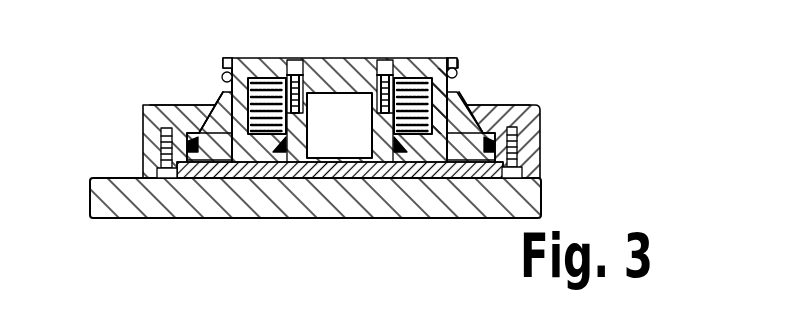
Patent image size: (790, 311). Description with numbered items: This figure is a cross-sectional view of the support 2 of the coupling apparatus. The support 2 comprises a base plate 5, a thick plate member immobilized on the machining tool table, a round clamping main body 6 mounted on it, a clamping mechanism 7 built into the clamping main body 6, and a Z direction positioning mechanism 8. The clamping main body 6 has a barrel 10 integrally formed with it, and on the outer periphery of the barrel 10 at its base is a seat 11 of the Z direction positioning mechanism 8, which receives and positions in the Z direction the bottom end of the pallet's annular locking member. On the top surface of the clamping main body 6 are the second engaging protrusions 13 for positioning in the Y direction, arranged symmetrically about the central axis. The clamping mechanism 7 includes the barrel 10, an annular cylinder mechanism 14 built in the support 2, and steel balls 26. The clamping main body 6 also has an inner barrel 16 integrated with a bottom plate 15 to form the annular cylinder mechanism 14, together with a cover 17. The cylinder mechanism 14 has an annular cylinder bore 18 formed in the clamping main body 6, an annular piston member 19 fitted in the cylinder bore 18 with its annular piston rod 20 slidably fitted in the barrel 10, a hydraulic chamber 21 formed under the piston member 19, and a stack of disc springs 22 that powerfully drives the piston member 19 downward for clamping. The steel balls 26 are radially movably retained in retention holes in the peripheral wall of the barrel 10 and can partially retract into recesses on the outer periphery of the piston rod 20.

The support 2 is at (567, 174).
The base plate 5 is at (97, 198).
The clamping main body 6 is at (141, 155).
The clamping mechanism 7 is at (465, 62).
The Z direction positioning mechanism 8 is at (341, 112).
The barrel 10 is at (222, 62).
The seat 11 is at (463, 103).
The second engaging protrusions 13 is at (170, 103).
The cylinder mechanism 14 is at (224, 180).
The bottom plate 15 is at (287, 172).
The inner barrel 16 is at (372, 129).
The cover 17 is at (332, 57).
The cylinder bore 18 is at (541, 131).
The piston member 19 is at (505, 176).
The piston rod 20 is at (443, 58).
The hydraulic chamber 21 is at (462, 155).
The disc springs 22 is at (410, 158).
The steel balls 26 is at (221, 79).